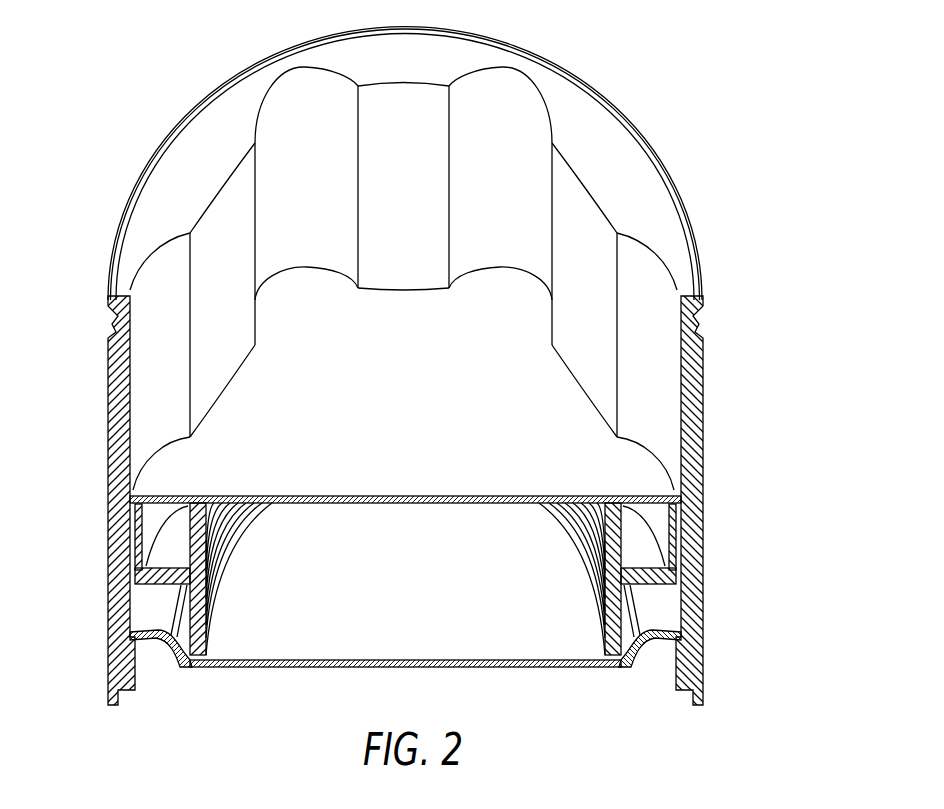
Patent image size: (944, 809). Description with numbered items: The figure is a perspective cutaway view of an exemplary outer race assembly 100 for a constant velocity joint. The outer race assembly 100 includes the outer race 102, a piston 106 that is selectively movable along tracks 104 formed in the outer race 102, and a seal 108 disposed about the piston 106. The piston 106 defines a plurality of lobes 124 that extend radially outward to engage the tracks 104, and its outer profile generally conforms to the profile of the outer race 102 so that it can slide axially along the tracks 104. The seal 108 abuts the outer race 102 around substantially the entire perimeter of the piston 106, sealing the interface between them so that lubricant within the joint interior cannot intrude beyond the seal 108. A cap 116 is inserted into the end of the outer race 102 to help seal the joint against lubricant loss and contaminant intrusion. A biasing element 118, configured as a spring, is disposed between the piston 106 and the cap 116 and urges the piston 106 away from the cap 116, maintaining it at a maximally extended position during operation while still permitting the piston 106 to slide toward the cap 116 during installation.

The outer race assembly 100 is at (101, 161).
The outer race 102 is at (703, 382).
The tracks 104 is at (163, 272).
The piston 106 is at (427, 406).
The seal 108 is at (115, 570).
The cap 116 is at (414, 591).
The biasing element 118 is at (223, 563).
The lobes 124 is at (168, 470).